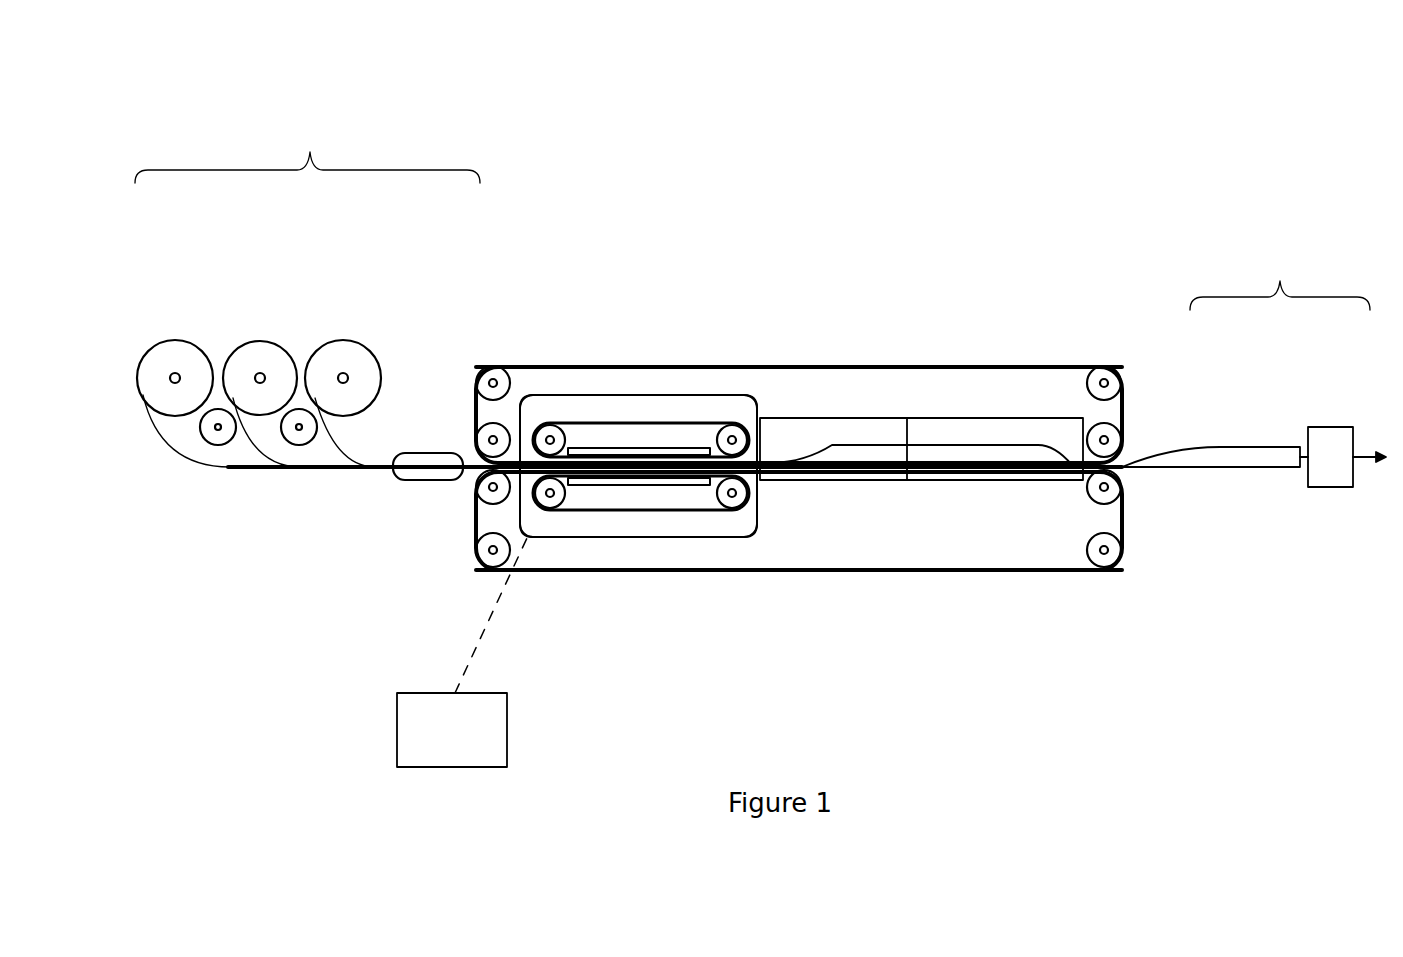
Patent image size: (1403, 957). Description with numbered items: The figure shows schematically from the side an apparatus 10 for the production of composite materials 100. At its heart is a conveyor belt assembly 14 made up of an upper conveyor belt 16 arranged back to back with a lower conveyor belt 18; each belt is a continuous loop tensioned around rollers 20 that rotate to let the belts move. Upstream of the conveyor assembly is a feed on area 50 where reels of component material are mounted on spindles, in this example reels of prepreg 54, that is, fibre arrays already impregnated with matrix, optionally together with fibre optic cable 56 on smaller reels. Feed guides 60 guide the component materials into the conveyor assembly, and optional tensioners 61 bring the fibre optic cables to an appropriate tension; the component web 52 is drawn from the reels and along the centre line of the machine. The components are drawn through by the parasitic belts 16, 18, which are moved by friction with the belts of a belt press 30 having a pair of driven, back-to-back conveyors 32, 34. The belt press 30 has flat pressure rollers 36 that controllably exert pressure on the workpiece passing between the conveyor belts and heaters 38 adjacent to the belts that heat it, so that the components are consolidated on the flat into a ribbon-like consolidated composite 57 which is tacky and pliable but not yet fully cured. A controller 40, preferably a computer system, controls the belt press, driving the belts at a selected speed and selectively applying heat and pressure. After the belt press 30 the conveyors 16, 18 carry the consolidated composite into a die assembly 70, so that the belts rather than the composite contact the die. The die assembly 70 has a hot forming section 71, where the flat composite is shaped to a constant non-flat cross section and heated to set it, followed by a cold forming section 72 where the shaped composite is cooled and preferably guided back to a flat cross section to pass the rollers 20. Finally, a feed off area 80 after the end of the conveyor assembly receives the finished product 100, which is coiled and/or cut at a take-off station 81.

The apparatus 10 is at (960, 258).
The conveyor belt assembly 14 is at (1060, 592).
The upper conveyor belt 16 is at (1068, 364).
The lower conveyor belt 18 is at (1085, 570).
The rollers 20 is at (486, 432).
The belt press 30 is at (762, 542).
The conveyor belt of belt press 32 is at (703, 421).
The conveyor belt of belt press 34 is at (685, 512).
The pressure rollers 36 is at (552, 430).
The heaters 38 is at (637, 447).
The controller 40 is at (437, 741).
The feed on area 50 is at (307, 150).
The web 52 is at (172, 385).
The reels of prepreg 54 is at (158, 362).
The fibre optic cable 56 is at (225, 433).
The consolidated composite 57 is at (770, 423).
The feed guides 60 is at (423, 359).
The tensioners 61 is at (422, 452).
The die assembly 70 is at (940, 482).
The hot forming section 71 is at (897, 418).
The cold forming section 72 is at (1042, 418).
The feed off area 80 is at (1280, 280).
The winder 81 is at (1316, 470).
The composite materials 100 is at (1245, 446).